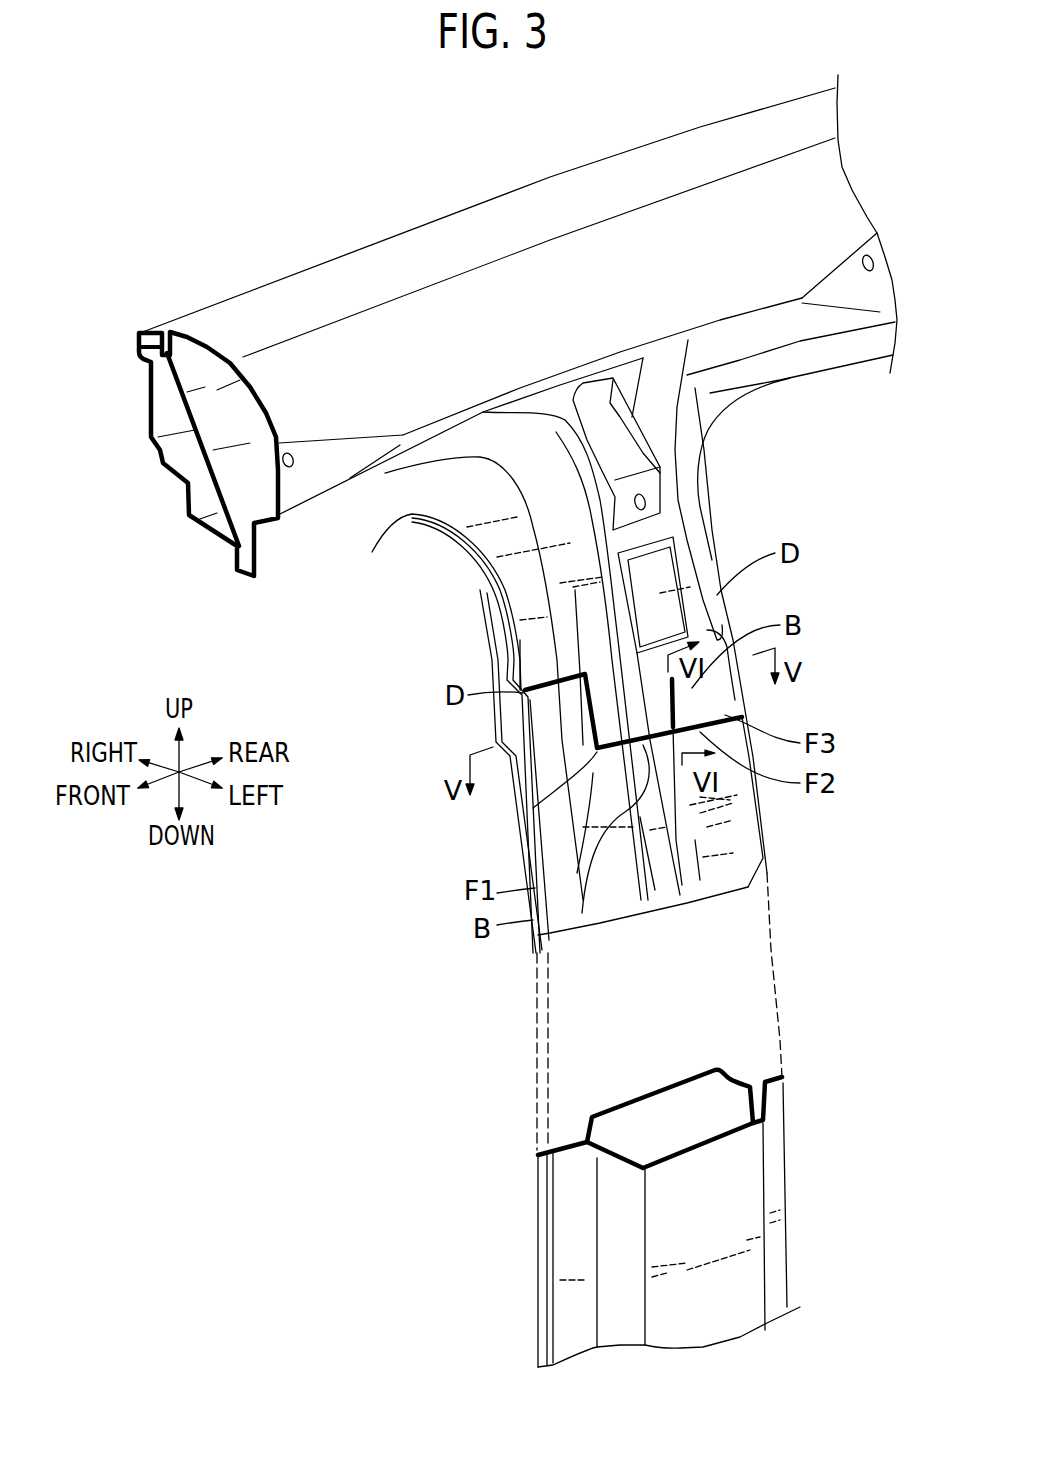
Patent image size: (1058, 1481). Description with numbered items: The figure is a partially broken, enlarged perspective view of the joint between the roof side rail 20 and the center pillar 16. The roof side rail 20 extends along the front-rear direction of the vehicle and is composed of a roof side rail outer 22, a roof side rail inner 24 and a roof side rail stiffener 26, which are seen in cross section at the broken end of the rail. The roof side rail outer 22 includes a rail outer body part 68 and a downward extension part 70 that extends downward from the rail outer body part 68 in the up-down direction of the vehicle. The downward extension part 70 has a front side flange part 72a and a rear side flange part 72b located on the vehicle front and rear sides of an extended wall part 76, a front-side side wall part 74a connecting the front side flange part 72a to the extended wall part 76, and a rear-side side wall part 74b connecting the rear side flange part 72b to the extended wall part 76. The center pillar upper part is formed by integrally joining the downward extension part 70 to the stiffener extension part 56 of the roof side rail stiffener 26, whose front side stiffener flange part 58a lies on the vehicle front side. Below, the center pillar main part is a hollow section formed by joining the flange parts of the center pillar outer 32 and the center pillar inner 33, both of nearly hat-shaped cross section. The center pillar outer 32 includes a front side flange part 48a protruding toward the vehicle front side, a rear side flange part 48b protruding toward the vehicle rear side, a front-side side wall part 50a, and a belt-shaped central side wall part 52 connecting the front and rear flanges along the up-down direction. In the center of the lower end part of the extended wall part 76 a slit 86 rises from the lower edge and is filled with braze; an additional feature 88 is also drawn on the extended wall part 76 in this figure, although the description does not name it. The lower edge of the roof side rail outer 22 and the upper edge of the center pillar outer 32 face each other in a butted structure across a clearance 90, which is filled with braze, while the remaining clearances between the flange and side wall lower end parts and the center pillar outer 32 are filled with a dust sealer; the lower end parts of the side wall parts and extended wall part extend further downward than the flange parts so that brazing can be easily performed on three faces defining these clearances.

The center pillar 16 is at (778, 857).
The roof side rail 20 is at (467, 200).
The roof side rail outer 22 is at (357, 372).
The roof side rail inner 24 is at (167, 408).
The roof side rail stiffener 26 is at (245, 470).
The center pillar outer 32 is at (727, 1177).
The center pillar inner 33 is at (663, 1120).
The front side flange part 48a is at (558, 826).
The rear side flange part 48b is at (743, 697).
The front-side side wall part 50a is at (573, 723).
The central side wall part 52 is at (733, 807).
The stiffener extension part 56 is at (498, 600).
The front side stiffener flange part 58a is at (497, 640).
The rail outer body part 68 is at (623, 273).
The downward extension part 70 is at (686, 489).
The front side flange part 72a is at (460, 487).
The rear side flange part 72b is at (707, 395).
The front-side side wall part 74a is at (570, 543).
The rear-side side wall part 74b is at (693, 527).
The extended wall part 76 is at (720, 622).
The slit 86 is at (530, 807).
The opening 88 is at (703, 573).
The clearance 90 is at (663, 887).